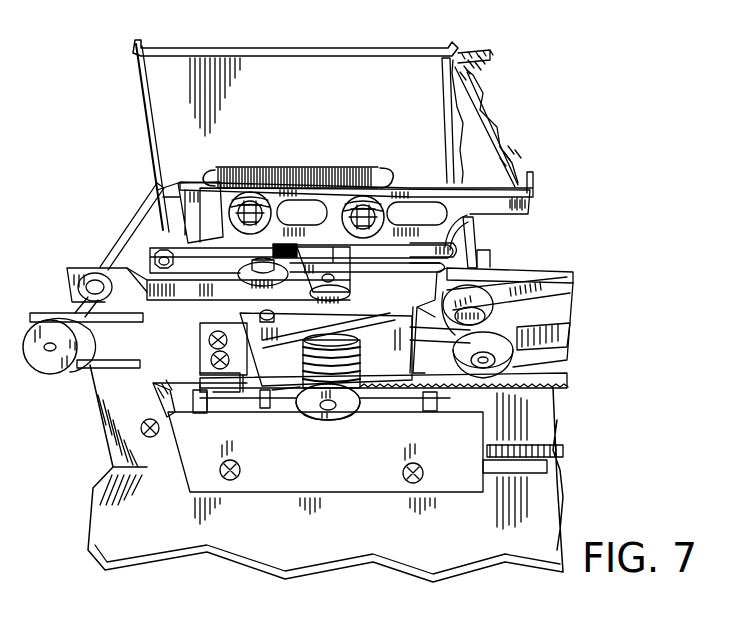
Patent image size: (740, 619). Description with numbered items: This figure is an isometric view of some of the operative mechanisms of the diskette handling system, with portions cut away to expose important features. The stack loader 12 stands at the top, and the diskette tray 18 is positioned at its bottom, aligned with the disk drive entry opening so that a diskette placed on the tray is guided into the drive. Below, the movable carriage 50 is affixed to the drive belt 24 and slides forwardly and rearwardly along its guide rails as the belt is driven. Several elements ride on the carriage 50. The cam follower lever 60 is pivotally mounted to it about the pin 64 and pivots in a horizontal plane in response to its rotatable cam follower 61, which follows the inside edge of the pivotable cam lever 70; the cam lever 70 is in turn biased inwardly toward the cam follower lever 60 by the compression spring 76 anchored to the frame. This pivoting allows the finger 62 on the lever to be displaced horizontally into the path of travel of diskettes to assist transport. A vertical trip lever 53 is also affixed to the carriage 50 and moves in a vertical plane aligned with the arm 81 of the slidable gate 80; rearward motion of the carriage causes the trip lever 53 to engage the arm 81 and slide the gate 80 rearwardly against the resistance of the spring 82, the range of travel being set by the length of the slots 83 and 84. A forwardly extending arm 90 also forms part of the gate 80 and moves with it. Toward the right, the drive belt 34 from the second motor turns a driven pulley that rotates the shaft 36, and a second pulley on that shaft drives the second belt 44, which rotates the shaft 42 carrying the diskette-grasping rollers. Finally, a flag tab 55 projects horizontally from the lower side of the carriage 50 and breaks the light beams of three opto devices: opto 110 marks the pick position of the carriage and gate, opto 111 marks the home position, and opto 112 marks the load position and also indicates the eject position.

The stack loader 12 is at (360, 48).
The slidable gate 80 is at (178, 193).
The shaft 42 is at (150, 190).
The cam follower lever 60 is at (185, 260).
The pin 64 is at (150, 265).
The spring 82 is at (333, 180).
The slot 83 is at (302, 197).
The slot 84 is at (415, 187).
The forwardly extending arm 90 is at (532, 182).
The arm 81 is at (247, 243).
The diskette tray 18 is at (476, 230).
The shaft 36 is at (492, 250).
The drive belt 34 is at (560, 279).
The finger 62 is at (340, 257).
The trip lever 53 is at (292, 255).
The carriage 50 is at (220, 312).
The opto device 110 is at (197, 393).
The cam follower 61 is at (363, 297).
The cam lever 70 is at (300, 333).
The drive belt 24 is at (567, 373).
The second belt 44 is at (107, 367).
The flag tab 55 is at (240, 397).
The opto device 111 is at (272, 403).
The compression spring 76 is at (368, 393).
The opto device 112 is at (437, 397).